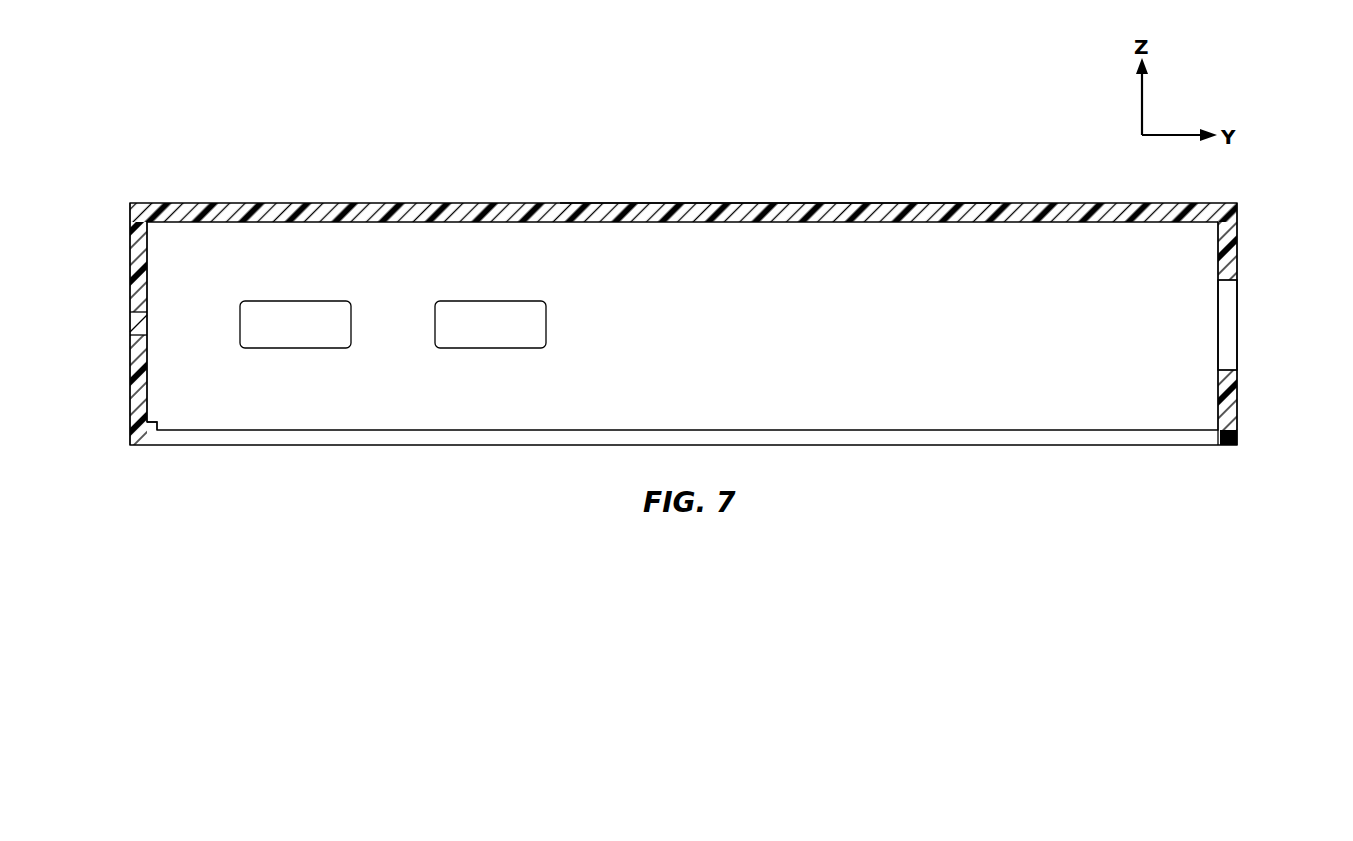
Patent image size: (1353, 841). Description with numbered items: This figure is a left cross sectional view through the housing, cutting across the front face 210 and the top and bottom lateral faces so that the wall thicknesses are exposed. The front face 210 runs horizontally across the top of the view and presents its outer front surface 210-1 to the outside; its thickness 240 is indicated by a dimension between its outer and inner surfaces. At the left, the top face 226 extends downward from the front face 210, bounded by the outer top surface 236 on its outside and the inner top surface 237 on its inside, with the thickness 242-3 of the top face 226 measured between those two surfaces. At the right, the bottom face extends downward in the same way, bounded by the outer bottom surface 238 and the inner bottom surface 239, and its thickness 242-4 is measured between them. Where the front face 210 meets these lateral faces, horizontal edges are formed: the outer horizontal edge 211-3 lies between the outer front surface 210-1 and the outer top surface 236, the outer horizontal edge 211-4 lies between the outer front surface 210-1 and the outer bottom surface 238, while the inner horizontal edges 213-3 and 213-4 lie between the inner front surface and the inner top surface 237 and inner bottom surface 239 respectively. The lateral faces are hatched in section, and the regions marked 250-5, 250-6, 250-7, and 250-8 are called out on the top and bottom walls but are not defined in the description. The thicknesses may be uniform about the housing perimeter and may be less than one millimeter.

The front face 210 is at (680, 195).
The outer front surface 210-1 is at (790, 203).
The outer horizontal edge 211-3 is at (130, 203).
The outer horizontal edge 211-4 is at (1237, 203).
The inner horizontal edge 213-3 is at (146, 223).
The inner horizontal edge 213-4 is at (1220, 223).
The top face 226 is at (130, 340).
The outer top surface 236 is at (122, 377).
The inner top surface 237 is at (148, 368).
The outer bottom surface 238 is at (1245, 377).
The inner bottom surface 239 is at (1218, 370).
The thickness 240 is at (569, 247).
The thickness 242-3 is at (165, 410).
The thickness 242-4 is at (1195, 410).
The conductive layer region 250-5 is at (206, 232).
The conductive layer region 250-6 is at (1211, 278).
The conductive layer region 250-7 is at (258, 218).
The conductive layer region 250-8 is at (1210, 330).